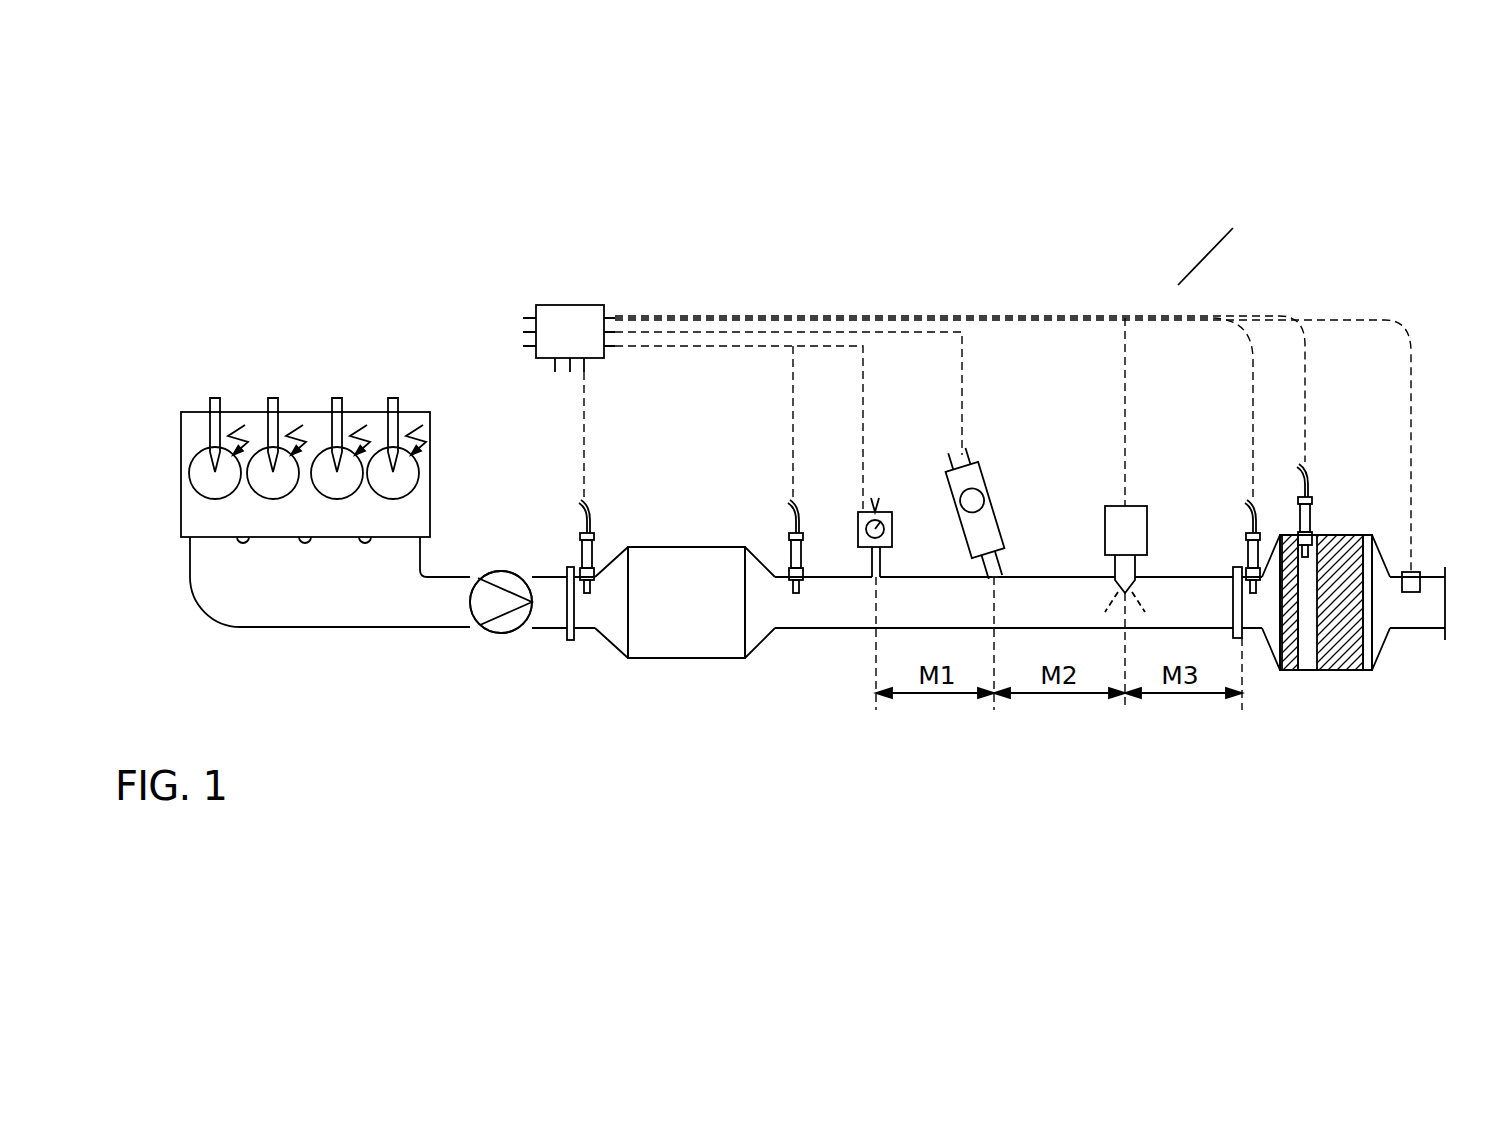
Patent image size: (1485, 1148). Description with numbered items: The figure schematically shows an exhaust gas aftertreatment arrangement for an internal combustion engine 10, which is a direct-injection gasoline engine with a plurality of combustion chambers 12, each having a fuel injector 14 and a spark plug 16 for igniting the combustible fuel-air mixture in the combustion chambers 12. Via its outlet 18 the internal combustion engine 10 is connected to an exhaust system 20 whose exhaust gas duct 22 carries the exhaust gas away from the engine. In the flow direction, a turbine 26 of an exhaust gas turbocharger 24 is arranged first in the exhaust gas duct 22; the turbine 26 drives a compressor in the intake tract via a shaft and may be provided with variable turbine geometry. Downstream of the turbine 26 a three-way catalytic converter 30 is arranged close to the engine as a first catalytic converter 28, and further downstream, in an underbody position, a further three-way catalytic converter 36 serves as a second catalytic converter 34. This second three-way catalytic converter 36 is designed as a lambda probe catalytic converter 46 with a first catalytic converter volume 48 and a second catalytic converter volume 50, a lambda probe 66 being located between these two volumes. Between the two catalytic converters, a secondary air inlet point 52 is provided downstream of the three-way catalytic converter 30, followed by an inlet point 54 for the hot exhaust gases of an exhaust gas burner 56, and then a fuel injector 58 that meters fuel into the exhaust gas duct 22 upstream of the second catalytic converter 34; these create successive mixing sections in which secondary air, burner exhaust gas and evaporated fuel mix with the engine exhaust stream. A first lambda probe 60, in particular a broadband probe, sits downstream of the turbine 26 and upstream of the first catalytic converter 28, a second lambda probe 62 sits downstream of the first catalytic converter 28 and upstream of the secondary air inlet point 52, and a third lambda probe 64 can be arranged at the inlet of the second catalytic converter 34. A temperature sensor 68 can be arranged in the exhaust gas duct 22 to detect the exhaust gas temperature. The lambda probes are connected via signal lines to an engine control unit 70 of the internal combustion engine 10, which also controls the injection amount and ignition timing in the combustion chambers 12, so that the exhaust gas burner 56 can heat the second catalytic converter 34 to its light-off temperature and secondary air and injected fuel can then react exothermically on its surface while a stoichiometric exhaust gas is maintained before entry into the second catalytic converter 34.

The internal combustion engine 10 is at (193, 430).
The combustion chamber 12 is at (215, 473).
The fuel injector 14 is at (393, 398).
The spark plug 16 is at (448, 505).
The outlet 18 is at (304, 556).
The exhaust system 20 is at (1190, 273).
The exhaust gas duct 22 is at (439, 617).
The exhaust gas turbocharger 24 is at (501, 571).
The turbine 26 is at (501, 602).
The first catalytic converter 28 is at (688, 548).
The three-way catalytic converter 30 is at (686, 602).
The second catalytic converter 34 is at (1329, 593).
The further three-way catalytic converter 36 is at (1326, 602).
The lambda probe catalytic converter 46 is at (1326, 556).
The first catalytic converter volume 48 is at (1287, 662).
The second catalytic converter volume 50 is at (1353, 536).
The secondary air inlet point 52 is at (870, 577).
The inlet point 54 is at (994, 577).
The exhaust gas burner 56 is at (994, 509).
The fuel injector 58 is at (1133, 535).
The first lambda probe 60 is at (587, 530).
The second lambda probe 62 is at (796, 530).
The third lambda probe 64 is at (1253, 537).
The lambda probe 66 is at (1305, 501).
The temperature sensor 68 is at (1416, 574).
The engine control unit 70 is at (570, 325).